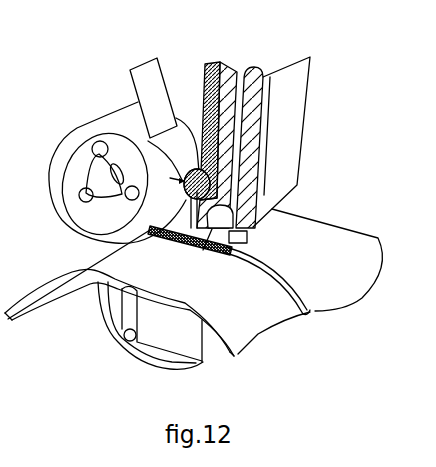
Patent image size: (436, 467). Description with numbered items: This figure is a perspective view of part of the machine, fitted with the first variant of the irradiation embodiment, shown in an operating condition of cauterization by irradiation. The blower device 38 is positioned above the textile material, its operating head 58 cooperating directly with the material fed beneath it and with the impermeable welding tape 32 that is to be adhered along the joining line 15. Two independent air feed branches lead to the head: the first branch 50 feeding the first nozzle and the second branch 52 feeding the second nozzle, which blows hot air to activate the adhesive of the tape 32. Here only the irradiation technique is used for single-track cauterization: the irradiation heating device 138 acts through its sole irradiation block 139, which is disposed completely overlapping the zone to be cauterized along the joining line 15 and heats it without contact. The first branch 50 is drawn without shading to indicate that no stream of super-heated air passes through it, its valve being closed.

The joining line 15 is at (316, 313).
The impermeable welding tape 32 is at (142, 73).
The blower device 38 is at (311, 100).
The first branch 50 is at (249, 78).
The second branch 52 is at (219, 70).
The operating head 58 is at (286, 170).
The irradiation heating device 138 is at (256, 242).
The irradiation block 139 is at (128, 243).